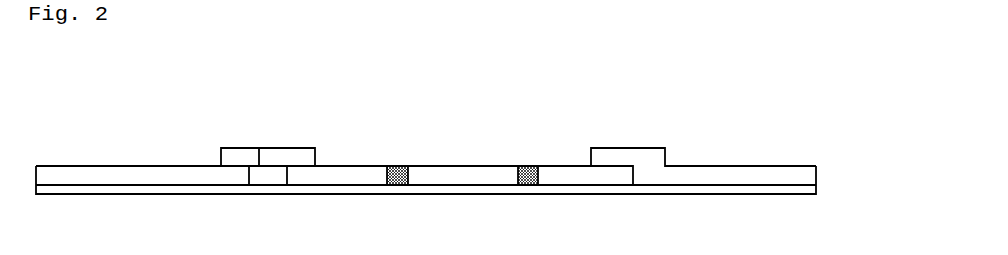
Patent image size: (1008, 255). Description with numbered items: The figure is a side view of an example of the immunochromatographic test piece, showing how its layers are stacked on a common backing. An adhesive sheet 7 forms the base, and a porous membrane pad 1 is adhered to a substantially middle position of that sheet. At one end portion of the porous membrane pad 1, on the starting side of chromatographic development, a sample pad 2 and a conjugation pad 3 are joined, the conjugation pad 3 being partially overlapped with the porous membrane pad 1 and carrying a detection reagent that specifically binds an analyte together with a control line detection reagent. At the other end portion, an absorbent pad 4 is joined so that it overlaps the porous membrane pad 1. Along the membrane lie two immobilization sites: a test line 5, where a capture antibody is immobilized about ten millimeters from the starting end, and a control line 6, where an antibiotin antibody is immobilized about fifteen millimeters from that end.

The porous membrane pad 1 is at (442, 153).
The sample pad 2 is at (157, 156).
The conjugation pad 3 is at (287, 131).
The absorbent pad 4 is at (720, 153).
The test line 5 is at (397, 149).
The control line 6 is at (527, 153).
The adhesive sheet 7 is at (825, 188).